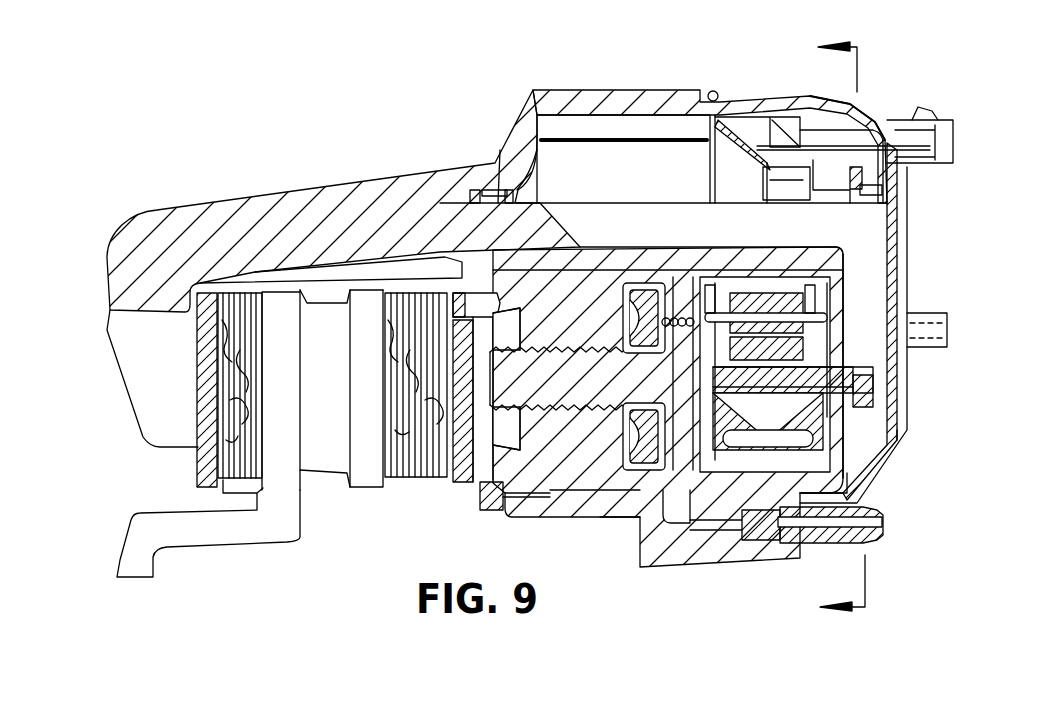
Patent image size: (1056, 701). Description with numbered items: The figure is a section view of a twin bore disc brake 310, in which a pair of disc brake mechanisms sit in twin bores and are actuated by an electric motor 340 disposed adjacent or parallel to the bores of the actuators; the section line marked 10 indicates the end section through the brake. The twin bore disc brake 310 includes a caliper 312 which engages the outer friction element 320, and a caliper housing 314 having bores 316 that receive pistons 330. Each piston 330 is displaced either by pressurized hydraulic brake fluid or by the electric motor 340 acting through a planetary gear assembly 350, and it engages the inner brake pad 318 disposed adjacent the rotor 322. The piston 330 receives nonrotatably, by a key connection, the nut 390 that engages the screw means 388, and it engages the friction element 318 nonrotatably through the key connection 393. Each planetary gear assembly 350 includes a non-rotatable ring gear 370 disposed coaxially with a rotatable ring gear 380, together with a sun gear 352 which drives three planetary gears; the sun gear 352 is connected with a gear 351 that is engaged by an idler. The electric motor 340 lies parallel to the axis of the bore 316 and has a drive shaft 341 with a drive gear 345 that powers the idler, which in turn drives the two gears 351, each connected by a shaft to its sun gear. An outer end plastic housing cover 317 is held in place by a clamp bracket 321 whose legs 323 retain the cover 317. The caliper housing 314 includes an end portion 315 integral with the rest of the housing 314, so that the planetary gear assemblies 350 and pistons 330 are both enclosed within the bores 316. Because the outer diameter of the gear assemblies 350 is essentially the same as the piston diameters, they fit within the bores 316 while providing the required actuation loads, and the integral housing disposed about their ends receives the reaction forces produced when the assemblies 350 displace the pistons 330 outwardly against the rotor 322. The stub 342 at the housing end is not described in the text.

The twin bore disc brake 310 is at (575, 64).
The caliper 312 is at (348, 183).
The caliper housing 314 is at (632, 90).
The end portion 315 is at (847, 302).
The bore 316 is at (610, 270).
The outer end plastic housing cover 317 is at (878, 127).
The inner brake pad 318 is at (415, 477).
The outer friction element 320 is at (223, 490).
The clamp bracket 321 is at (866, 104).
The rotor 322 is at (330, 473).
The legs 323 is at (908, 250).
The piston 330 is at (563, 268).
The electric motor 340 is at (597, 188).
The drive shaft 341 is at (893, 190).
The output shaft 342 is at (945, 302).
The drive gear 345 is at (867, 177).
The planetary gear assembly 350 is at (741, 234).
The gear 351 is at (877, 393).
The sun gear 352 is at (837, 350).
The non-rotatable ring gear 370 is at (787, 263).
The rotatable ring gear 380 is at (688, 268).
The screw means 388 is at (563, 360).
The nut 390 is at (627, 328).
The key connection 393 is at (462, 280).
The section line 10- 10 is at (854, 321).